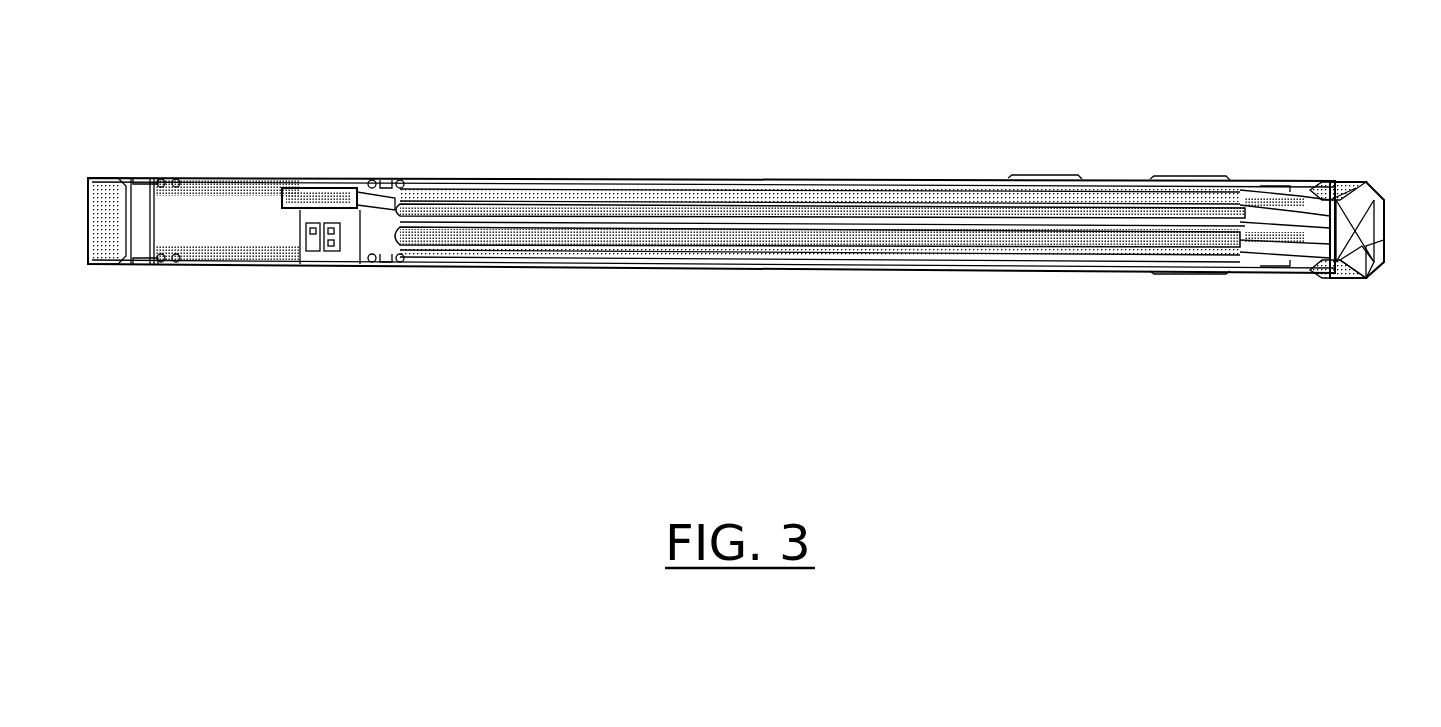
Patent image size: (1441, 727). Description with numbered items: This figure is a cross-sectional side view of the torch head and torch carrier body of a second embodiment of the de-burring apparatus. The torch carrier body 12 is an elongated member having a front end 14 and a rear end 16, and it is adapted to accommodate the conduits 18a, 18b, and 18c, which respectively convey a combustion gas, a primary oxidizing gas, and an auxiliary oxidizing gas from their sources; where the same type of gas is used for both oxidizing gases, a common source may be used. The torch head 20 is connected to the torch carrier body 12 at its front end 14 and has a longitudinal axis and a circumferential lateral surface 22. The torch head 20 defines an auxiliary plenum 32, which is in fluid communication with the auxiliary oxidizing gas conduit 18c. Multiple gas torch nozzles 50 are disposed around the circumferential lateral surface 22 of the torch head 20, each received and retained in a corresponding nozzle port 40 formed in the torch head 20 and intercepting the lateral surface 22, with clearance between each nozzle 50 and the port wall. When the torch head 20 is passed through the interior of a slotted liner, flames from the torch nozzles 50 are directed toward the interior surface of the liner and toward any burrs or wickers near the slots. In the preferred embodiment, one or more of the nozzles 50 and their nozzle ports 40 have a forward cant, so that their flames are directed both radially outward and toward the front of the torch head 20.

The torch carrier body 12 is at (895, 178).
The front end 14 is at (1286, 132).
The rear end 16 is at (128, 122).
The combustion gas conduit 18a is at (820, 259).
The primary oxidizing gas conduit 18b is at (765, 262).
The auxiliary oxidizing gas conduit 18c is at (605, 178).
The torch head 20 is at (1376, 279).
The circumferential lateral surface 22 is at (1338, 280).
The auxiliary plenum 32 is at (1378, 190).
The nozzle port 40 is at (1360, 282).
The torch nozzle 50 is at (1354, 184).